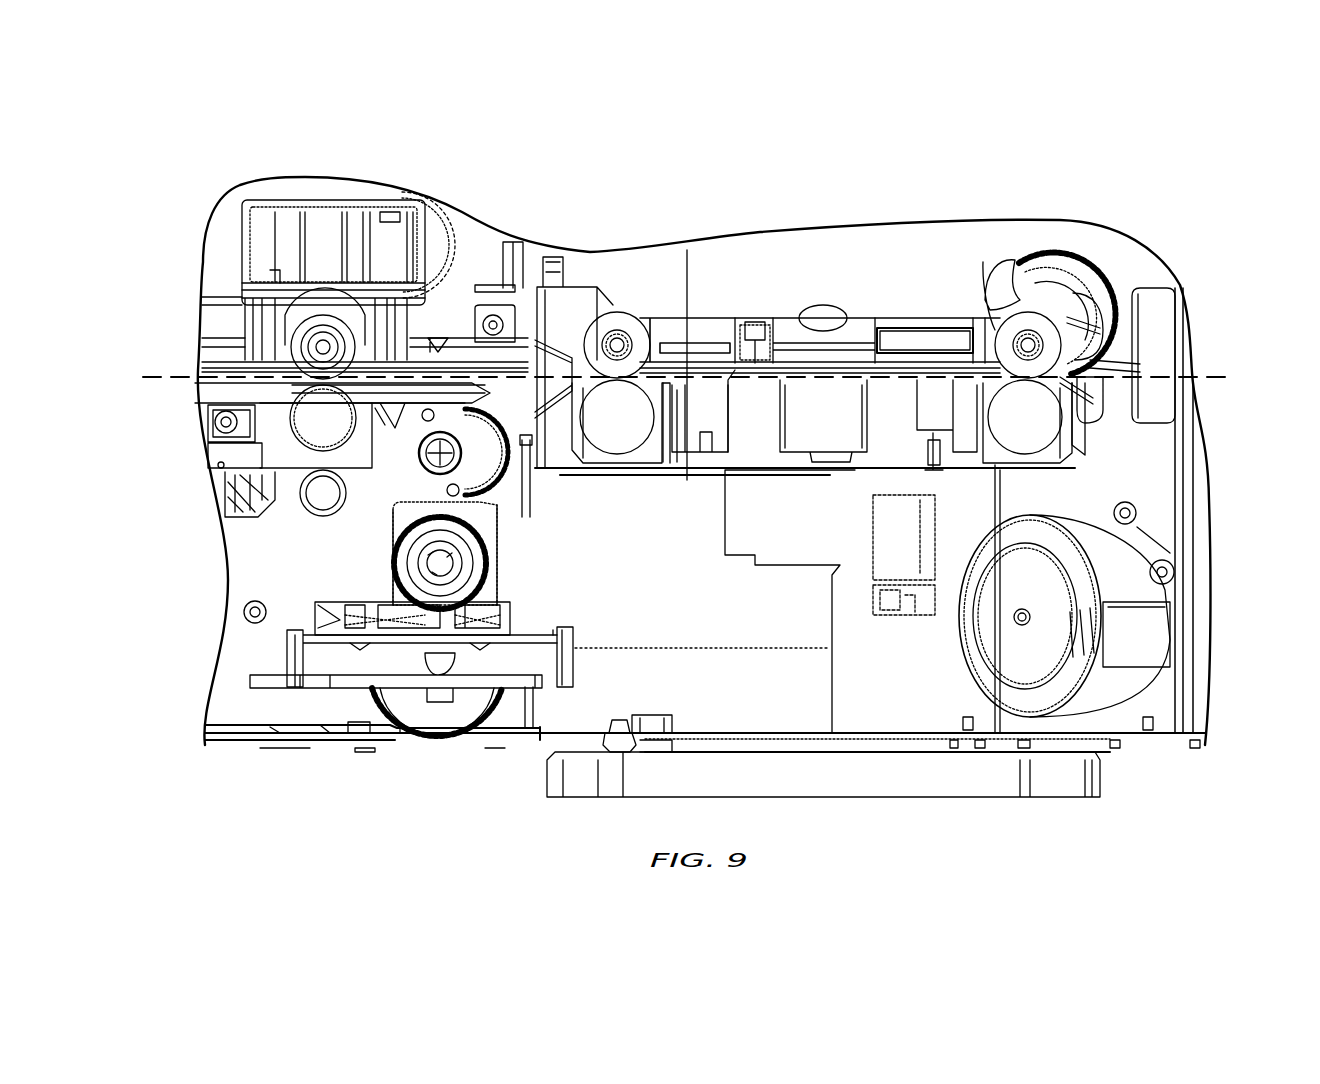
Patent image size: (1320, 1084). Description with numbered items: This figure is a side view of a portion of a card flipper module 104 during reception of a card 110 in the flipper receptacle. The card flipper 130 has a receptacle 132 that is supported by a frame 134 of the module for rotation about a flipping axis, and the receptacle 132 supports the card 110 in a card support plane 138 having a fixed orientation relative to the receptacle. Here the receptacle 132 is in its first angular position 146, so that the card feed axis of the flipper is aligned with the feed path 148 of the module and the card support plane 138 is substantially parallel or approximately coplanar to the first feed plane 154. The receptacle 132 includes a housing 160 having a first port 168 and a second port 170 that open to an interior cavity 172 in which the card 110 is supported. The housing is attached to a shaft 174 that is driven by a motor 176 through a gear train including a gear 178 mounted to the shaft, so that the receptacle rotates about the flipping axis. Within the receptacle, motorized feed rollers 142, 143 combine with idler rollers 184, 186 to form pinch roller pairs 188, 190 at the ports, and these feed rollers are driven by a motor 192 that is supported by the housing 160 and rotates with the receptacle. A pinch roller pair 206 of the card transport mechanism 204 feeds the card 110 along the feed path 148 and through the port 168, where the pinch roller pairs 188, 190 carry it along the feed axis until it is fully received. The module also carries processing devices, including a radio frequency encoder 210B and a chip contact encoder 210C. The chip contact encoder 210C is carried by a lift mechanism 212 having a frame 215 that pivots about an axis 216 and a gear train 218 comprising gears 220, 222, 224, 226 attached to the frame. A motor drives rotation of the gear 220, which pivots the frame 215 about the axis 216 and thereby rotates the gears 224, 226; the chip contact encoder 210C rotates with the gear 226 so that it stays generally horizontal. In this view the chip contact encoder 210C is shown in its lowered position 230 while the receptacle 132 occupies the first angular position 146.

The card flipper module 104 is at (1124, 198).
The card 110 is at (692, 395).
The card flipper 130 is at (995, 238).
The receptacle 132 is at (752, 322).
The frame 134 is at (1157, 303).
The card support plane 138 is at (1228, 377).
The feed roller 142 is at (618, 440).
The feed roller 143 is at (1022, 440).
The first angular position 146 is at (810, 520).
The feed path 148 is at (153, 377).
The first feed plane 154 is at (1163, 380).
The receptacle frame or housing 160 is at (697, 322).
The first port 168 is at (530, 330).
The second port 170 is at (1125, 352).
The interior cavity 172 is at (735, 393).
The shaft 174 is at (886, 322).
The motor 176 is at (980, 675).
The gear 178 is at (1090, 280).
The idler roller 184 is at (620, 333).
The idler roller 186 is at (985, 320).
The pinch roller pair 188 is at (580, 295).
The pinch roller pair 190 is at (1095, 458).
The motor 192 is at (742, 545).
The transport mechanism 204 is at (262, 435).
The pinch roller pair 206 is at (322, 432).
The radio frequency encoder 210B is at (278, 258).
The chip contact encoder 210C is at (598, 680).
The lift mechanism 212 is at (598, 615).
The frame 215 is at (488, 600).
The axis 216 is at (424, 465).
The gear train 218 is at (348, 565).
The gear 220 is at (228, 496).
The gear 222 is at (488, 495).
The gear 224 is at (400, 552).
The gear 226 is at (425, 727).
The lowered position 230 is at (212, 688).